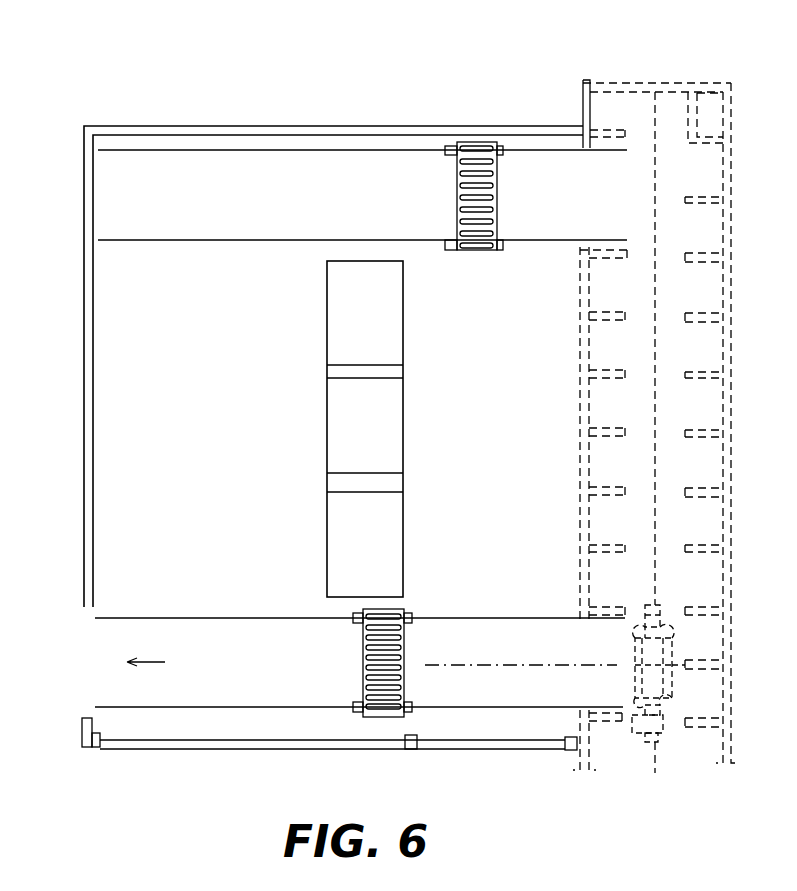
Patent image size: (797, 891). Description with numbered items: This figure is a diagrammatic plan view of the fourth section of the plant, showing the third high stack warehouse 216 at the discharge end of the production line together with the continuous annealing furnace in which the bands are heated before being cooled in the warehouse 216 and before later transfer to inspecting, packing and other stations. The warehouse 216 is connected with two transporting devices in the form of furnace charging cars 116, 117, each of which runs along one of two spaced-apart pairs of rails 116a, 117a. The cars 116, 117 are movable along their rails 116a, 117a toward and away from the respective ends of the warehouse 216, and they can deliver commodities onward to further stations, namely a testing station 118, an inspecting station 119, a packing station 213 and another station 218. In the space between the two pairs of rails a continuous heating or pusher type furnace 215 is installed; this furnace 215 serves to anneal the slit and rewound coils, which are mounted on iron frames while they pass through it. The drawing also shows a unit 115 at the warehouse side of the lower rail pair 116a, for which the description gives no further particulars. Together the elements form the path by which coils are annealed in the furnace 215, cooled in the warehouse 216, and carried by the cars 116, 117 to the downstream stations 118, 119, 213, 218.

The warehouse 216 is at (628, 103).
The pair of rails 117a is at (318, 152).
The furnace charging car 117 is at (500, 198).
The continuous heating or pusher type furnace 215 is at (403, 424).
The pair of rails 116a is at (197, 619).
The furnace charging car 116 is at (404, 647).
The drive unit 115 is at (636, 650).
The packing station 213 is at (28, 643).
The other station 218 is at (25, 682).
The testing station 118 is at (93, 643).
The inspecting station 119 is at (92, 682).